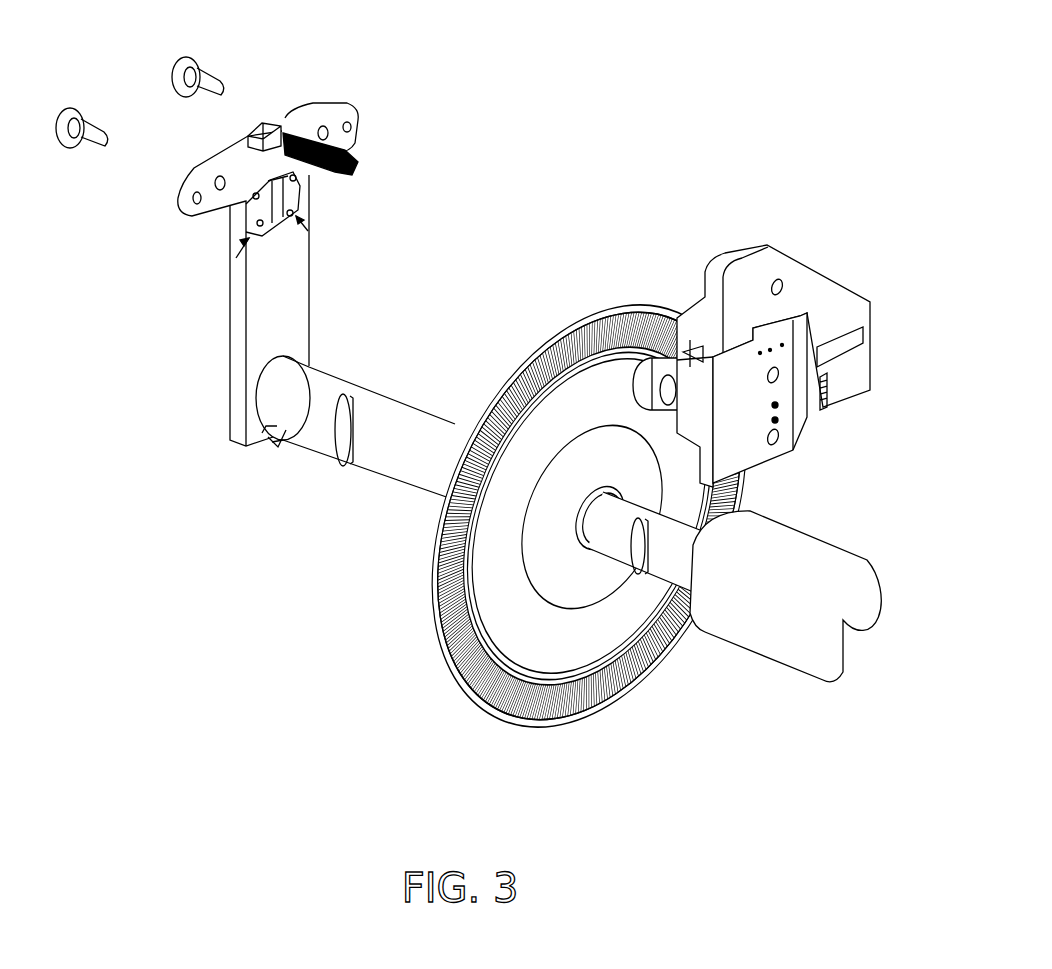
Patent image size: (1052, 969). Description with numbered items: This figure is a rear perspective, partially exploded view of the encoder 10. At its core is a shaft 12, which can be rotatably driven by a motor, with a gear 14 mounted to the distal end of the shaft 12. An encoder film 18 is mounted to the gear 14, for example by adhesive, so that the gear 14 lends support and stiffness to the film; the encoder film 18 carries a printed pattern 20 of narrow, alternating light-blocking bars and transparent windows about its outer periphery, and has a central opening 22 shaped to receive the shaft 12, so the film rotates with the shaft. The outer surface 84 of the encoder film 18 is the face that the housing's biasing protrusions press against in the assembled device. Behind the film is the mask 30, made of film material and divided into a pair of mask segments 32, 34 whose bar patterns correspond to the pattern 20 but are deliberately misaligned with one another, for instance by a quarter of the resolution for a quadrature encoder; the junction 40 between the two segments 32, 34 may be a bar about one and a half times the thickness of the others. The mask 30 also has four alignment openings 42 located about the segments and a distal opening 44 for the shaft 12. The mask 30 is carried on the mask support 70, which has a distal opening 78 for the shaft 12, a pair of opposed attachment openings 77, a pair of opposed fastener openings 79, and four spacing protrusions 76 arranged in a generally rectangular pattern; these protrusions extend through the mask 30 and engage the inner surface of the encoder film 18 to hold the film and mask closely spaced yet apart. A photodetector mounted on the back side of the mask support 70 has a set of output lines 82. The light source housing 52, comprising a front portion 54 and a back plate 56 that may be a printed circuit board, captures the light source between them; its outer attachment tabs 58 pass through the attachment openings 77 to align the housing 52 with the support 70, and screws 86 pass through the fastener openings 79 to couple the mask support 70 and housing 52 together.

The encoder 10 is at (557, 167).
The shaft 12 is at (682, 522).
The gear 14 is at (551, 592).
The encoder film 18 is at (512, 655).
The printed pattern 20 is at (453, 652).
The central opening 22 is at (590, 512).
The mask 30 is at (311, 330).
The mask segment 32 is at (272, 164).
The mask segment 34 is at (302, 188).
The junction 40 is at (280, 236).
The alignment openings 42 is at (236, 258).
The distal opening 44 is at (270, 445).
The light source housing 52 is at (773, 357).
The front portion 54 is at (730, 312).
The back plate 56 is at (772, 470).
The attachment tabs 58 is at (633, 386).
The mask support 70 is at (230, 424).
The spacing protrusions 76 is at (253, 148).
The attachment openings 77 is at (353, 128).
The distal opening 78 is at (318, 370).
The fastener openings 79 is at (320, 116).
The output lines 82 is at (362, 166).
The outer surface 84 is at (468, 527).
The screws 86 is at (176, 64).